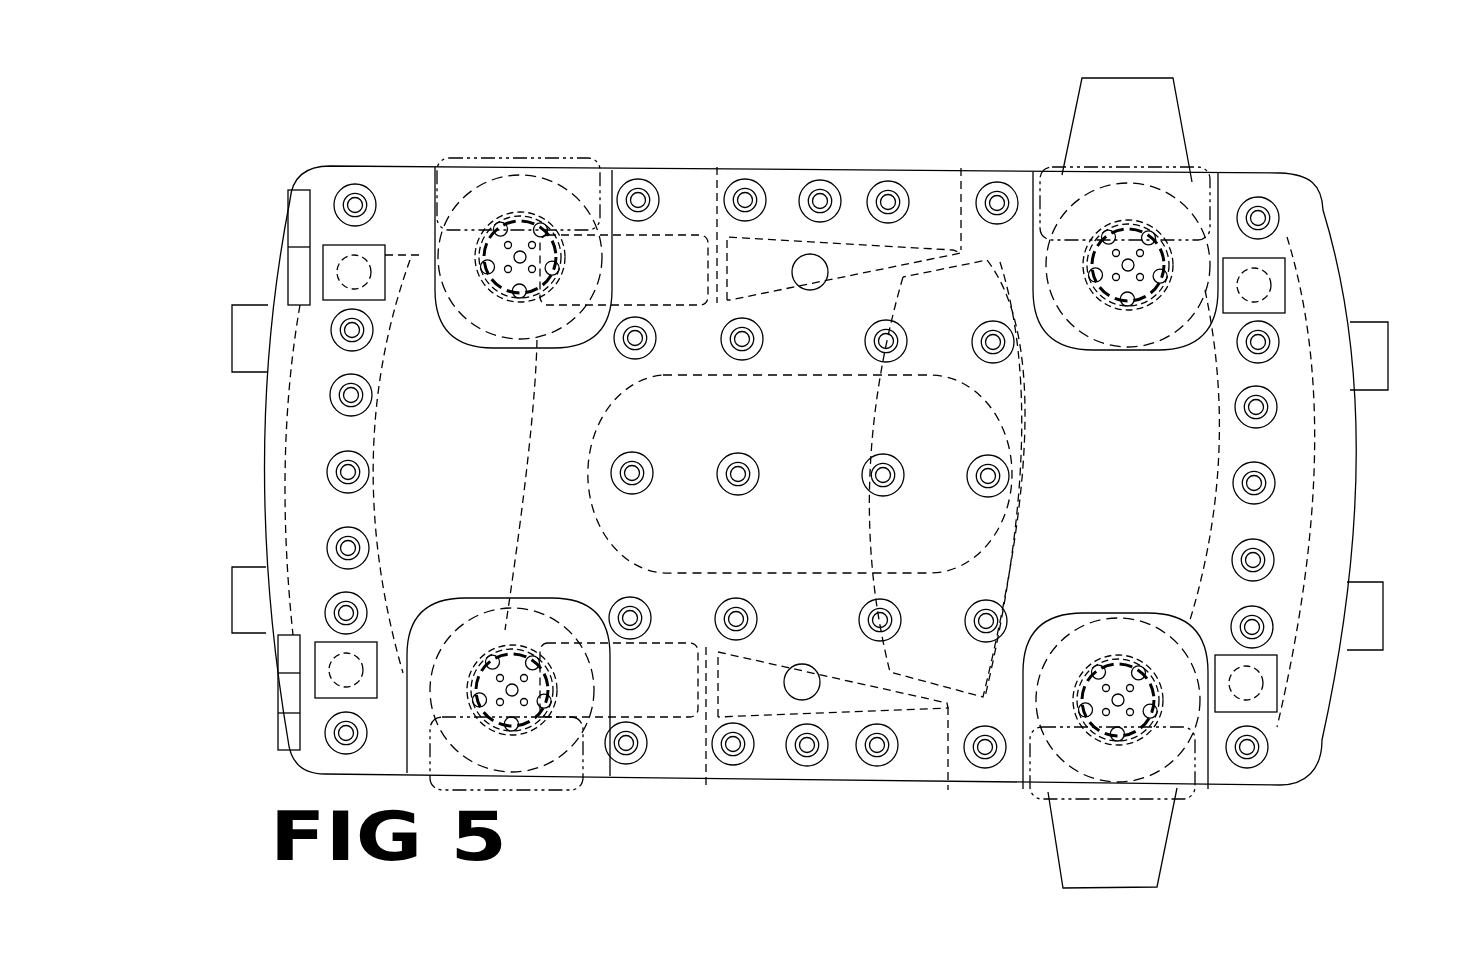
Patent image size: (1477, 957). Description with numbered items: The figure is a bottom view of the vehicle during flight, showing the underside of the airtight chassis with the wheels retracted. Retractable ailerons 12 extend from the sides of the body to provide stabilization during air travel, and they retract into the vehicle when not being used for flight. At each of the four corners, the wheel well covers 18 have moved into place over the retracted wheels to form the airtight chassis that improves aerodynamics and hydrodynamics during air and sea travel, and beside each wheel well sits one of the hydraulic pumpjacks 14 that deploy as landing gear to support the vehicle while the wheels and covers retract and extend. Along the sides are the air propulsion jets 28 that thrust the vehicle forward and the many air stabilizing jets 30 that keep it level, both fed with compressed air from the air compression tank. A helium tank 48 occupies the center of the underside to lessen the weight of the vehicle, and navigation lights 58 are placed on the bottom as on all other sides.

The retractable ailerons 12 is at (1178, 132).
The hydraulic pumpjacks 14 is at (382, 245).
The wheel well covers 18 is at (537, 340).
The air propulsion jets 28 is at (232, 372).
The air stabilizing jets 30 is at (335, 345).
The helium tank 48 is at (633, 392).
The navigation lights 58 is at (793, 663).